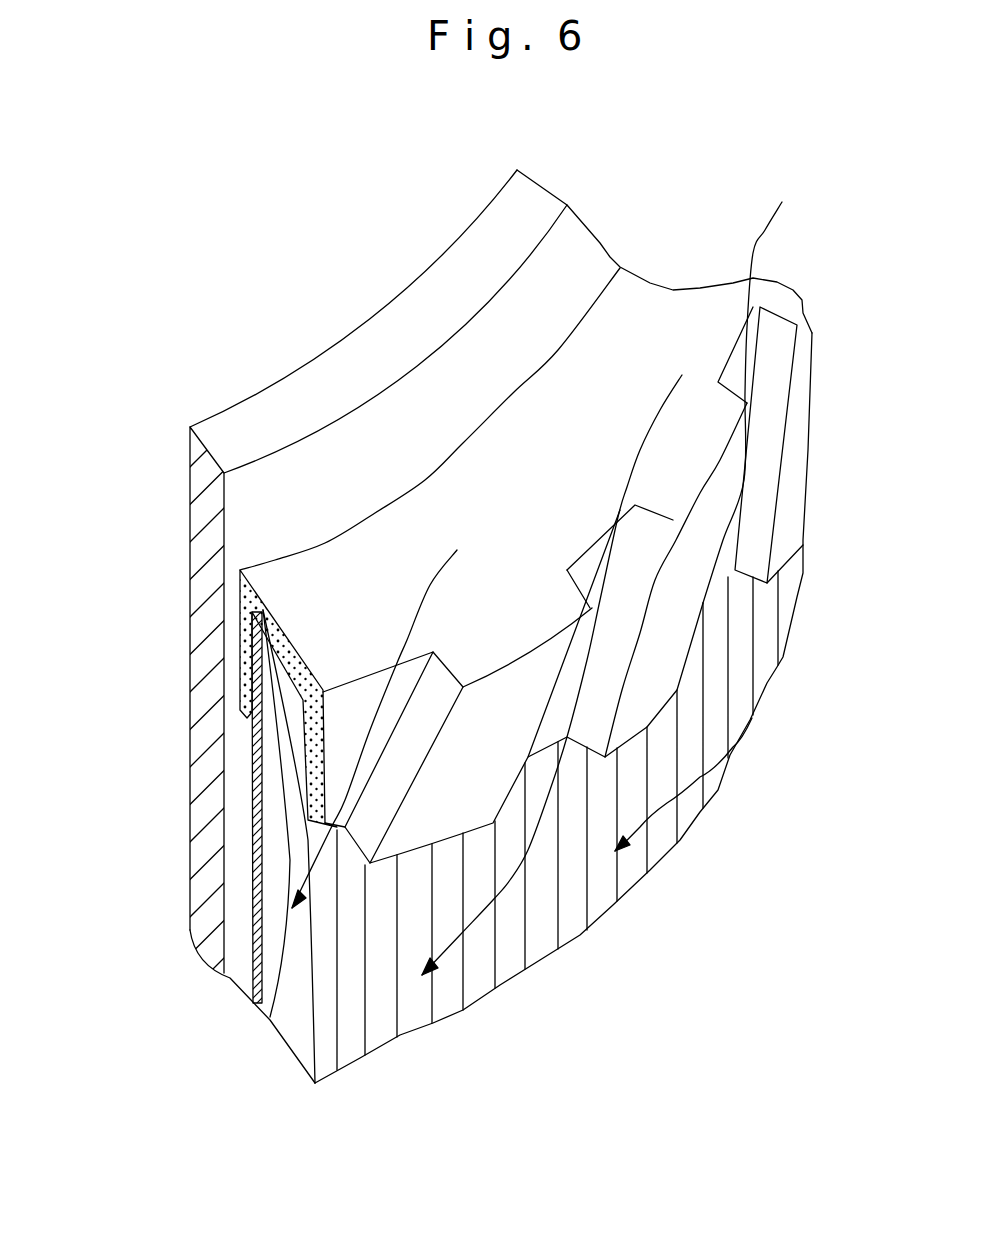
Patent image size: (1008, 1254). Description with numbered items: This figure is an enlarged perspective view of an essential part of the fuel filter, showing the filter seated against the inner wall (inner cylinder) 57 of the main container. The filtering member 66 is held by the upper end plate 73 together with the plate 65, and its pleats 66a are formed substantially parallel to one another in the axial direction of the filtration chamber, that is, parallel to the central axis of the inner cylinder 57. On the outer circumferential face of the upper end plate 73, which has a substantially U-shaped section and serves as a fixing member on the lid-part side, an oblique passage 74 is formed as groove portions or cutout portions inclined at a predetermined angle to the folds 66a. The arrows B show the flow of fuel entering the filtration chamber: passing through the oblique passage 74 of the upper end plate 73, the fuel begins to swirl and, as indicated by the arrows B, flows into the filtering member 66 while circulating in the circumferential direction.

The inner wall (inner cylinder) 57 is at (212, 508).
The upper end plate 73 is at (258, 598).
The plate 65 is at (255, 862).
The filtering member 66 is at (287, 997).
The pleats 66a is at (533, 928).
The oblique passage 74 is at (618, 625).
The arrows indicating flow of fuel B is at (787, 222).